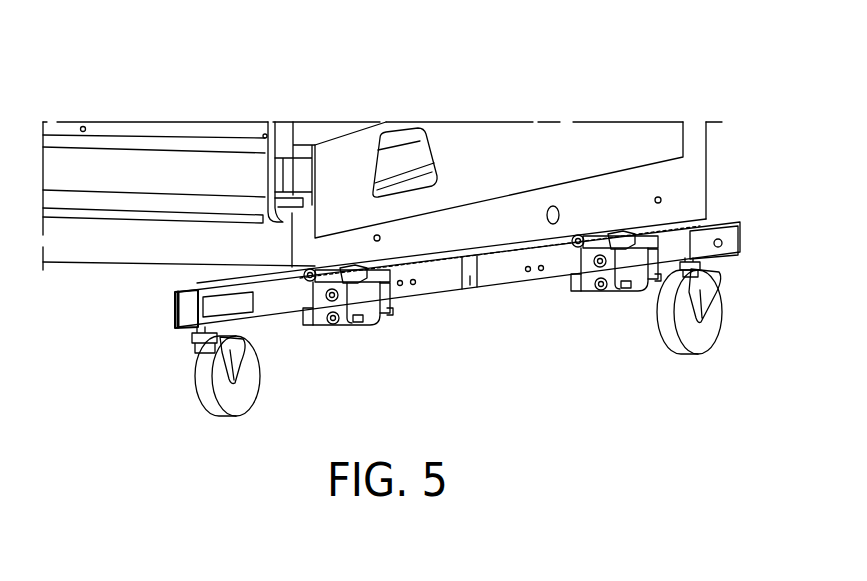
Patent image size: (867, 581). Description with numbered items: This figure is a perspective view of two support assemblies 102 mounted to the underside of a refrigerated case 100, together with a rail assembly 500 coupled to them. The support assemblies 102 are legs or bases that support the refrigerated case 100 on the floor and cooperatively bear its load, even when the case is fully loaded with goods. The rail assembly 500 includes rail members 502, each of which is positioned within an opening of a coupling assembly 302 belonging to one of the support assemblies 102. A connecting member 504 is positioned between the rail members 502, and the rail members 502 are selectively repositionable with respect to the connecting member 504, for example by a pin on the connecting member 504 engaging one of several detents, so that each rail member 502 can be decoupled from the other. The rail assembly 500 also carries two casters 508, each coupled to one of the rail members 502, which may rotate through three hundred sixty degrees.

The refrigerated case 100 is at (214, 102).
The rail assembly 500 is at (500, 302).
The rail member 502 is at (682, 243).
The connecting member 504 is at (473, 287).
The caster 508 is at (713, 338).
The support assembly 102 is at (378, 337).
The coupling assembly 302 is at (311, 334).